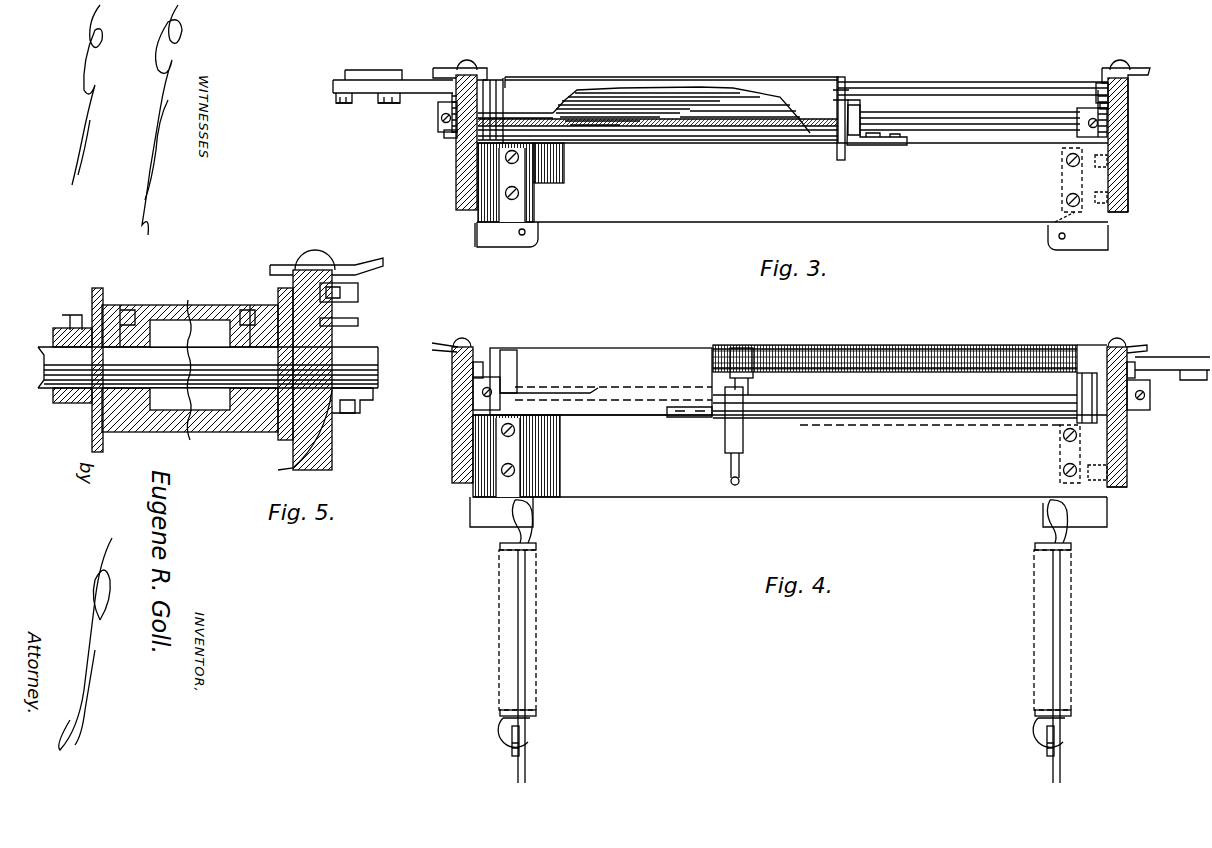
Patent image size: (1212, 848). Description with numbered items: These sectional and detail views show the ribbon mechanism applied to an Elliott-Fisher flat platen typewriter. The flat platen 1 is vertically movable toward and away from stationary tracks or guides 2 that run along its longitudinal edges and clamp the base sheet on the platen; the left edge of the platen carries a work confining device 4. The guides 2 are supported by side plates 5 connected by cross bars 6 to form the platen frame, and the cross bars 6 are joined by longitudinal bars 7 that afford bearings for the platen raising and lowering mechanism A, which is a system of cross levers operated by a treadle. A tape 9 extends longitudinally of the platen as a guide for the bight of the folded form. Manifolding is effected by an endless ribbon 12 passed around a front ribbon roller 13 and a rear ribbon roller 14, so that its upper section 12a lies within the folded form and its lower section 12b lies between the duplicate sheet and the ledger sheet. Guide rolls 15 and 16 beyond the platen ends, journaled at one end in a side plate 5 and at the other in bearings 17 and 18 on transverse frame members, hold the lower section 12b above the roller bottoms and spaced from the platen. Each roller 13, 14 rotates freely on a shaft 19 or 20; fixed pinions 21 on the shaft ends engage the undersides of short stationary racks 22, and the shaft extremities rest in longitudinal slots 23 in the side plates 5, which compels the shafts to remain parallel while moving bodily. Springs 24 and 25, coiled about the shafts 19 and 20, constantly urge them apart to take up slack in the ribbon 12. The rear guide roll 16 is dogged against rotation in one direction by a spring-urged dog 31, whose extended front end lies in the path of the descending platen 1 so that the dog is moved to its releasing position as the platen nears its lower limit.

In FIG. 3, the flat platen 1 is at (1030, 82).
In FIG. 4, the flat platen 1 is at (1090, 350).
In FIG. 3, the tracks or guides 2 is at (467, 66).
In FIG. 4, the tracks or guides 2 is at (1120, 343).
In FIG. 5, the tracks or guides 2 is at (345, 266).
In FIG. 3, the work confining device 4 is at (362, 70).
In FIG. 3, the side plates 5 is at (456, 197).
In FIG. 4, the side plates 5 is at (452, 483).
In FIG. 5, the side plates 5 is at (335, 440).
In FIG. 3, the cross bars 6 is at (645, 222).
In FIG. 4, the cross bars 6 is at (650, 497).
In FIG. 3, the bars 7 is at (1060, 178).
In FIG. 3, the tape 9 is at (843, 78).
In FIG. 4, the tape 9 is at (740, 350).
In FIG. 3, the endless ribbon 12 is at (534, 77).
In FIG. 3, the upper section of the ribbon 12a is at (657, 78).
In FIG. 4, the upper section of the ribbon 12a is at (900, 347).
In FIG. 3, the lower section of the ribbon 12b is at (700, 100).
In FIG. 4, the lower section of the ribbon 12b is at (958, 340).
In FIG. 3, the ribbon roller 13 is at (496, 90).
In FIG. 5, the ribbon roller 13 is at (205, 305).
In FIG. 4, the ribbon roller 14 is at (1077, 380).
In FIG. 3, the guide roll 15 is at (660, 135).
In FIG. 4, the guide roll 16 is at (925, 415).
In FIG. 3, the bearing 17 is at (873, 147).
In FIG. 4, the bearing 18 is at (690, 418).
In FIG. 3, the shaft 19 is at (935, 113).
In FIG. 4, the shaft 20 is at (555, 385).
In FIG. 5, the shaft 20 is at (380, 350).
In FIG. 3, the pinions 21 is at (453, 137).
In FIG. 4, the pinions 21 is at (457, 383).
In FIG. 5, the pinions 21 is at (358, 322).
In FIG. 3, the stationary racks 22 is at (448, 98).
In FIG. 4, the stationary racks 22 is at (455, 360).
In FIG. 5, the stationary racks 22 is at (358, 292).
In FIG. 5, the longitudinal slots 23 is at (290, 440).
In FIG. 3, the spring 24 is at (1080, 133).
In FIG. 4, the spring 25 is at (515, 352).
In FIG. 4, the spring-urged dog 31 is at (745, 440).
In FIG. 4, the platen raising and lowering mechanism A is at (528, 760).